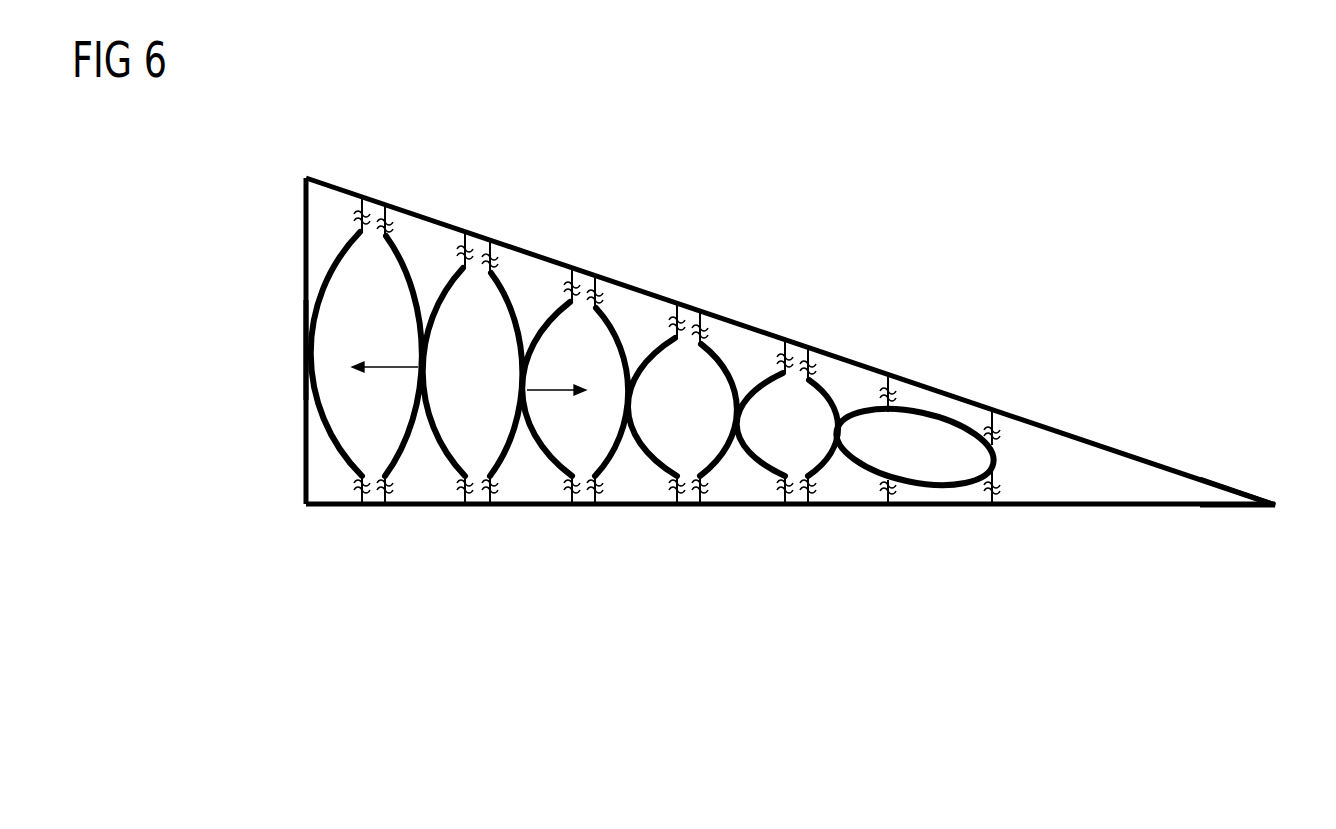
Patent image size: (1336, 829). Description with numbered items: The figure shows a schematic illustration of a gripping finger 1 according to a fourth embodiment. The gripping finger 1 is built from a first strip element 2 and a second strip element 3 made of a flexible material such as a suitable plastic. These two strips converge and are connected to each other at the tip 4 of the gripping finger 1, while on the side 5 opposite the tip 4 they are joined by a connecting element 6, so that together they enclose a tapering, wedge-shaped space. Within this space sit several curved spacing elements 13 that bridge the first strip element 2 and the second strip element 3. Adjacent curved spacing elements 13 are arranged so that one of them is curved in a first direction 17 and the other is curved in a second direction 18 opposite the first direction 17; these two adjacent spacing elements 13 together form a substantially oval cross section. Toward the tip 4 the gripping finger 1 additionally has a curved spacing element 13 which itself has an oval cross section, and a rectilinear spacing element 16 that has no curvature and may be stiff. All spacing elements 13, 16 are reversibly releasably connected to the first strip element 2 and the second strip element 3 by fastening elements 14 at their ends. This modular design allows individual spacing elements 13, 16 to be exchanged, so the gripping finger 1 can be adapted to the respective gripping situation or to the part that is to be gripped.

The gripping finger 1 is at (777, 381).
The first strip element 2 is at (452, 507).
The second strip element 3 is at (750, 325).
The tip 4 is at (1277, 500).
The side 5 is at (276, 350).
The connecting element 6 is at (306, 418).
The curved spacing elements 13 is at (410, 312).
The fastening elements 14 is at (355, 202).
The rectilinear spacing element 16 is at (1000, 452).
The first direction 17 is at (385, 369).
The second direction 18 is at (556, 392).